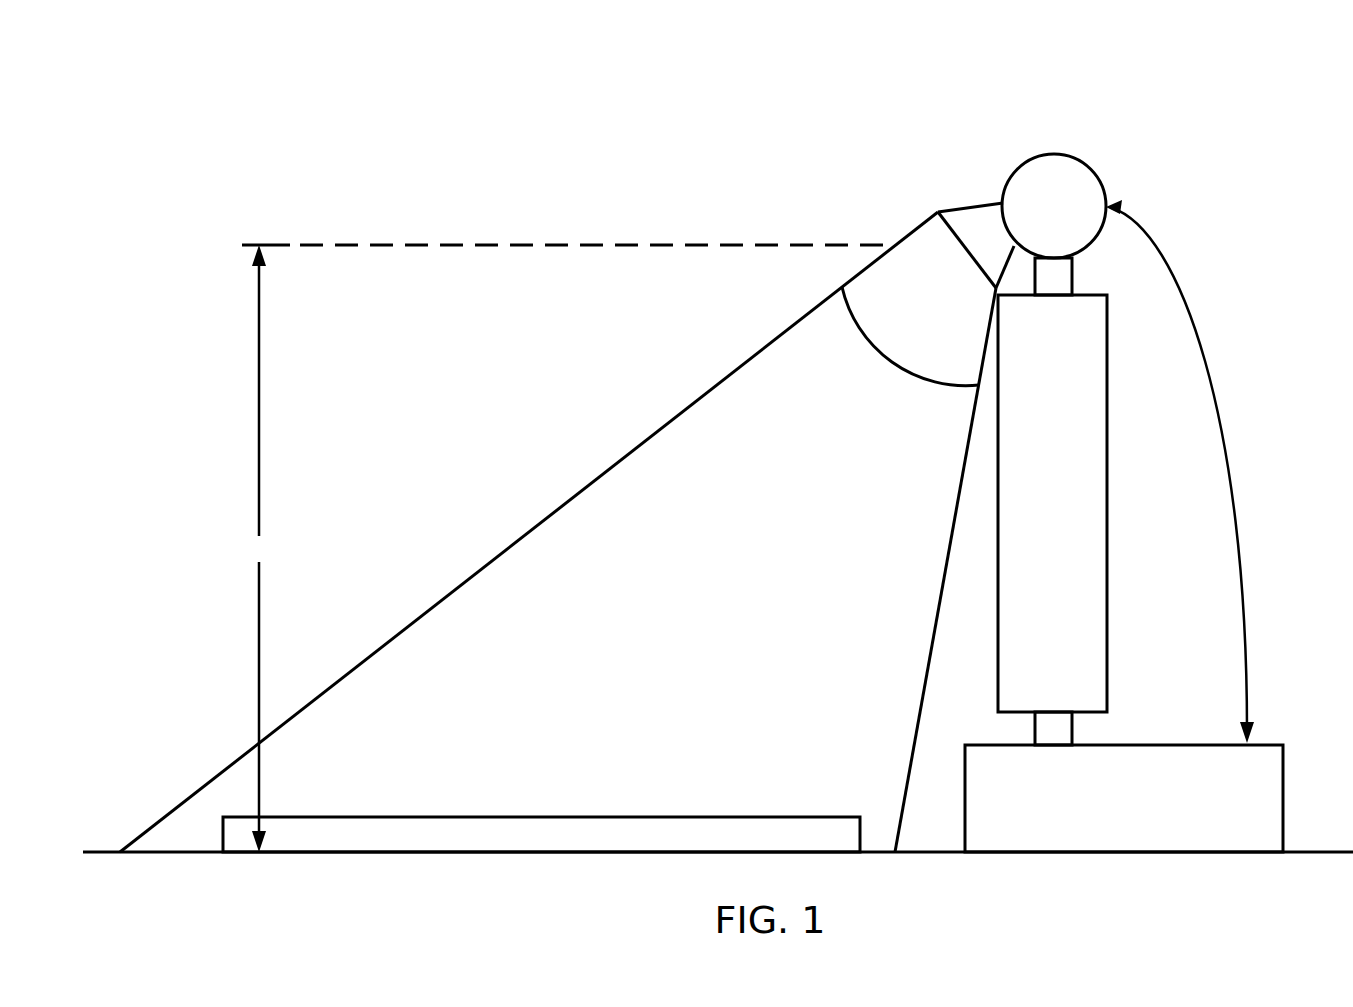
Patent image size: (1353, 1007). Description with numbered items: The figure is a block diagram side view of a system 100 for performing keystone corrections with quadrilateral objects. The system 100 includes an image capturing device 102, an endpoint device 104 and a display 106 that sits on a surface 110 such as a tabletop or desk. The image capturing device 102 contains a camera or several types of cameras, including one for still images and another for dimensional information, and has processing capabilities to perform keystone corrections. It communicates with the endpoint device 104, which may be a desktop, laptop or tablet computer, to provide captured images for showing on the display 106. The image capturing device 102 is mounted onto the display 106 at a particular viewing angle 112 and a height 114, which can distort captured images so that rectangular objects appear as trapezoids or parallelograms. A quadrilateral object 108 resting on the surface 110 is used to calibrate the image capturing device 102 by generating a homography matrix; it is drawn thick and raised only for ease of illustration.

The system 100 is at (126, 53).
The image capturing device 102 is at (1054, 206).
The endpoint device 104 is at (1124, 798).
The display 106 is at (1052, 503).
The quadrilateral object 108 is at (541, 834).
The surface 110 is at (168, 852).
The viewing angle 112 is at (890, 358).
The height 114 is at (259, 447).